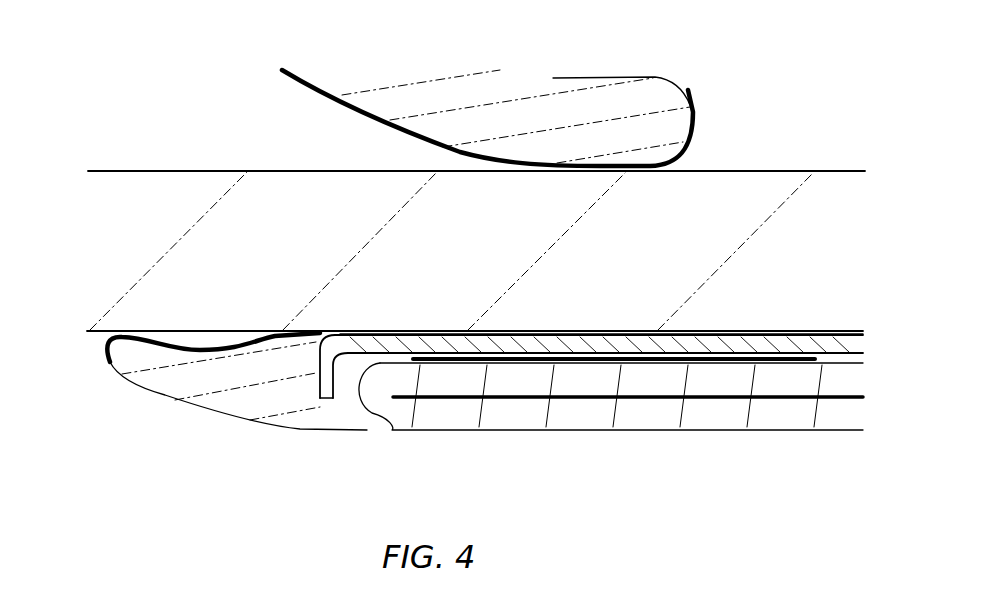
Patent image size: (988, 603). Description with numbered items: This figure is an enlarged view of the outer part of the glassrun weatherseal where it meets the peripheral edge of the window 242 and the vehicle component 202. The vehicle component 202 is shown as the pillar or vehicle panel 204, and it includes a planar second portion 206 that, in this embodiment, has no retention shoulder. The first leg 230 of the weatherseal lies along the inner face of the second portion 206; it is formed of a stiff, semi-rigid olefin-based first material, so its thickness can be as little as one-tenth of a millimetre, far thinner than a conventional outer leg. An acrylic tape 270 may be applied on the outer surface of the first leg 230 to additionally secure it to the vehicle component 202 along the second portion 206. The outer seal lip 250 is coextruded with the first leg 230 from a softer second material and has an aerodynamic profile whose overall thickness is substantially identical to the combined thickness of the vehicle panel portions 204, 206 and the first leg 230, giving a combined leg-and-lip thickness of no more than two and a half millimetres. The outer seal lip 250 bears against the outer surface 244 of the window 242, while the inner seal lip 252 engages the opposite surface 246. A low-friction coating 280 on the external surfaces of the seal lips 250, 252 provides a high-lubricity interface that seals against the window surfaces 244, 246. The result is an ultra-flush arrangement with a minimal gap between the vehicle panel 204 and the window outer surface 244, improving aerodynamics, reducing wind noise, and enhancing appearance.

The vehicle component 202 is at (708, 420).
The vehicle panel 204 is at (853, 420).
The second portion of the vehicle component 206 is at (842, 383).
The first leg 230 is at (702, 337).
The window 242 is at (638, 290).
The outer surface of the window 244 is at (90, 332).
The inner surface of the window 246 is at (127, 167).
The outer seal lip 250 is at (237, 408).
The inner seal lip 252 is at (557, 80).
The acrylic tape 270 is at (435, 357).
The low-friction coating 280 is at (693, 136).